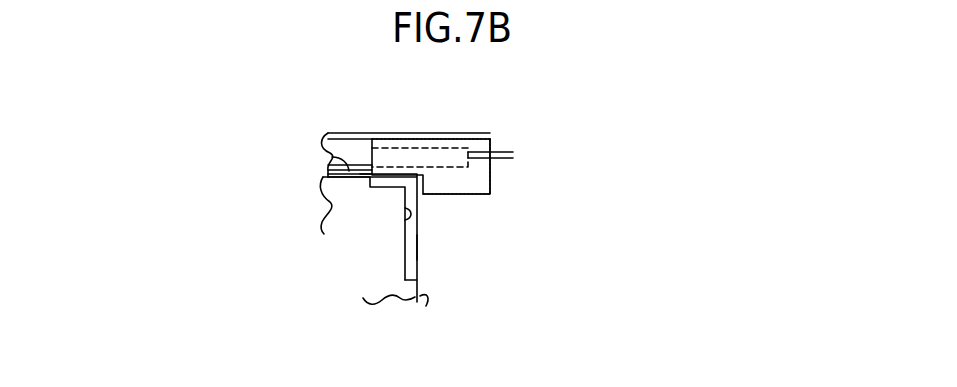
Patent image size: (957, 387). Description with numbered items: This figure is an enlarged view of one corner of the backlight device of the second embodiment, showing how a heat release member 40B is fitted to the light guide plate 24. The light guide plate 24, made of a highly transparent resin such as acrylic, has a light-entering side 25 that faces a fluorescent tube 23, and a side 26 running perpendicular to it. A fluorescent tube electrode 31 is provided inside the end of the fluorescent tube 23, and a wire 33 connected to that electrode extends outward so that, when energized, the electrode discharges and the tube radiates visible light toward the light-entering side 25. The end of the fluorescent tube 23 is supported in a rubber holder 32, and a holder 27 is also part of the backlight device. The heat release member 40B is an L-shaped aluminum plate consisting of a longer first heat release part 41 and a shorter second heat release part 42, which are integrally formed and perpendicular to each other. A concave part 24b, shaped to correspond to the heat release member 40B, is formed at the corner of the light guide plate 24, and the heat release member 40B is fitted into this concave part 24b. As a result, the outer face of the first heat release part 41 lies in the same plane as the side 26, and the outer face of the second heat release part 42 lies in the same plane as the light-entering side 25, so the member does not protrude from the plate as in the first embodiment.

The fluorescent tube 23 is at (328, 138).
The light guide plate 24 is at (358, 270).
The concave part 24b is at (404, 216).
The light-entering side 25 is at (347, 176).
The side 26 is at (426, 306).
The holder 27 is at (482, 134).
The fluorescent tube electrode 31 is at (467, 127).
The rubber holder 32 is at (475, 199).
The wire 33 is at (513, 152).
The heat release member 40B is at (407, 273).
The first heat release part 41 is at (418, 252).
The second heat release part 42 is at (369, 181).